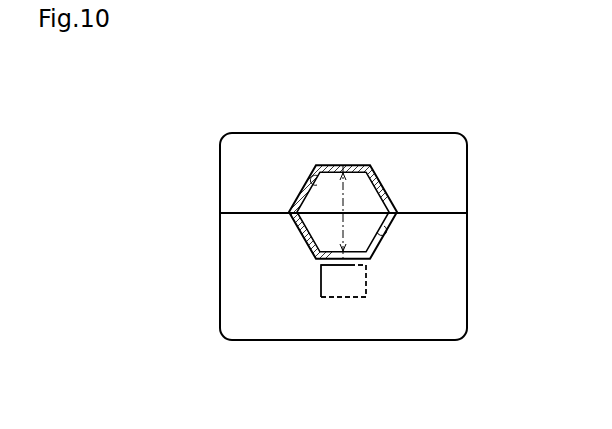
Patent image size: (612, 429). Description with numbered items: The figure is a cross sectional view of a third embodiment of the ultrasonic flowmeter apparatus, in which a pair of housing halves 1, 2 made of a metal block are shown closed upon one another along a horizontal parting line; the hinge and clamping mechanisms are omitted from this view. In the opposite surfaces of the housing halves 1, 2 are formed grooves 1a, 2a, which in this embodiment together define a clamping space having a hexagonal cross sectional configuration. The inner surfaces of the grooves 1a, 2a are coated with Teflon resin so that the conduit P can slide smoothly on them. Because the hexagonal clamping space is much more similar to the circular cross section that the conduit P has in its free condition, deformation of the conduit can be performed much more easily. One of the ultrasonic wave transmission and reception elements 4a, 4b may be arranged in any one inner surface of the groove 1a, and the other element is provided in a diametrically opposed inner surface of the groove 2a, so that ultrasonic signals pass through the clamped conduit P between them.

The housing half 1 is at (455, 255).
The groove 1a is at (386, 229).
The housing half 2 is at (418, 148).
The groove 2a is at (314, 176).
The conduit P is at (370, 190).
The ultrasonic wave transmission and reception element 4a is at (340, 285).
The ultrasonic wave transmission and reception element 4b is at (340, 285).